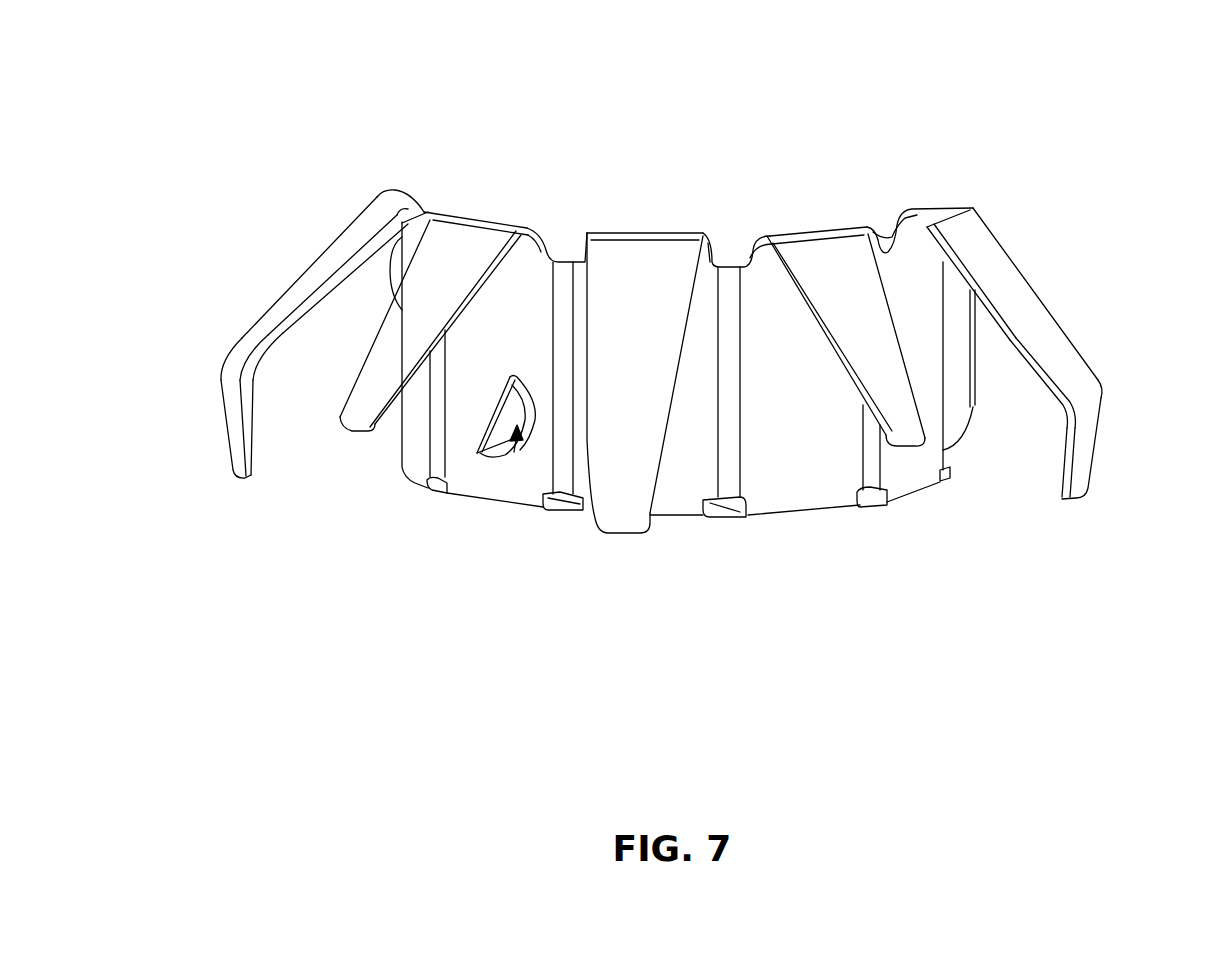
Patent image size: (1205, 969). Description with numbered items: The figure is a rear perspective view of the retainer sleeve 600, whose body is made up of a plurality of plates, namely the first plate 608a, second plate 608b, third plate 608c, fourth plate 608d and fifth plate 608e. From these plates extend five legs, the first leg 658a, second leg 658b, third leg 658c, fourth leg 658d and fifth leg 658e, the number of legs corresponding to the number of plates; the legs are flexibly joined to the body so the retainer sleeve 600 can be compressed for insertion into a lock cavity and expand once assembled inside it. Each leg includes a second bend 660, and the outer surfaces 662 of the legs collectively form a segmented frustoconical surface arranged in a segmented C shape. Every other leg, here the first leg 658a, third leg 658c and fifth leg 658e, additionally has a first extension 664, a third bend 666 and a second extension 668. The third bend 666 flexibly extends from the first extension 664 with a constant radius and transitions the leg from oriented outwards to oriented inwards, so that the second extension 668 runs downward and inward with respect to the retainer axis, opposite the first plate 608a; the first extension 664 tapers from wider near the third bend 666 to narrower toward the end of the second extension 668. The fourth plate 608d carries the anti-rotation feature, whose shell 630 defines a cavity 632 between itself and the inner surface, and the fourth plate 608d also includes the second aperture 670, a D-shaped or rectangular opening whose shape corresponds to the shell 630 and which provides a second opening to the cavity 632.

The retainer sleeve 600 is at (287, 92).
The first plate 608a is at (945, 485).
The second plate 608b is at (783, 453).
The third plate 608c is at (705, 290).
The fourth plate 608d is at (543, 268).
The fifth plate 608e is at (410, 453).
The shell 630 is at (517, 390).
The cavity 632 is at (514, 453).
The first leg 658a is at (1030, 283).
The second leg 658b is at (861, 250).
The third leg 658c is at (623, 257).
The fourth leg 658d is at (487, 238).
The fifth leg 658e is at (343, 237).
The second bend 660 is at (393, 197).
The outer surfaces 662 is at (310, 266).
The first extension 664 is at (286, 290).
The third bend 666 is at (222, 365).
The second extension 668 is at (228, 430).
The second aperture 670 is at (517, 445).